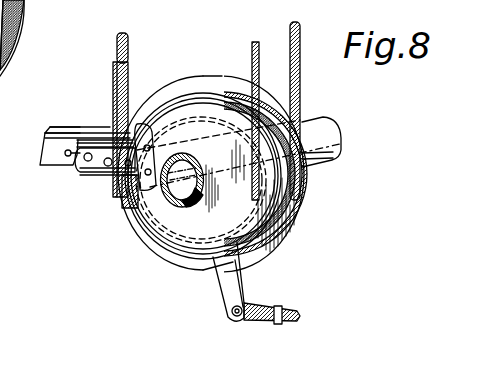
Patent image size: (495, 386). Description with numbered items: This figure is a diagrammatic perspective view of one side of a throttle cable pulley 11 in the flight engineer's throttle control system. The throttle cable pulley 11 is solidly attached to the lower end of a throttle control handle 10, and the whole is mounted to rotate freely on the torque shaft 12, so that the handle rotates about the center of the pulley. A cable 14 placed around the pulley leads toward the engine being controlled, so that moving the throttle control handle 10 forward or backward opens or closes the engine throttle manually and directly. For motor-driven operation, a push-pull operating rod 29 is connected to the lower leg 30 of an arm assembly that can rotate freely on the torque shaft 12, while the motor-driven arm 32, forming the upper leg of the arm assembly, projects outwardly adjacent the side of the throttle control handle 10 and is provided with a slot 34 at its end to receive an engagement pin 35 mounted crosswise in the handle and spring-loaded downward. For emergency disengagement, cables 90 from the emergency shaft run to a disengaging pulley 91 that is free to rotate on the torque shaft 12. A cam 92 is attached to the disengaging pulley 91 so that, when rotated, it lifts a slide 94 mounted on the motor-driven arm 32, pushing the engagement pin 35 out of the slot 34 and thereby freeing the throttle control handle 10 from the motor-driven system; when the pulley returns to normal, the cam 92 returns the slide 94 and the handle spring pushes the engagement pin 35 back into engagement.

The throttle control handle 10 is at (52, 158).
The throttle cable pulley 11 is at (293, 230).
The torque shaft 12 is at (332, 161).
The cable 14 is at (300, 30).
The push-pull operating rod 29 is at (290, 323).
The lower leg 30 is at (237, 266).
The motor-driven arm 32 is at (97, 128).
The slot 34 is at (63, 127).
The engagement pin 35 is at (67, 158).
The cables 90 is at (116, 68).
The disengaging pulley 91 is at (22, 12).
The cam 92 is at (138, 218).
The slide 94 is at (97, 183).